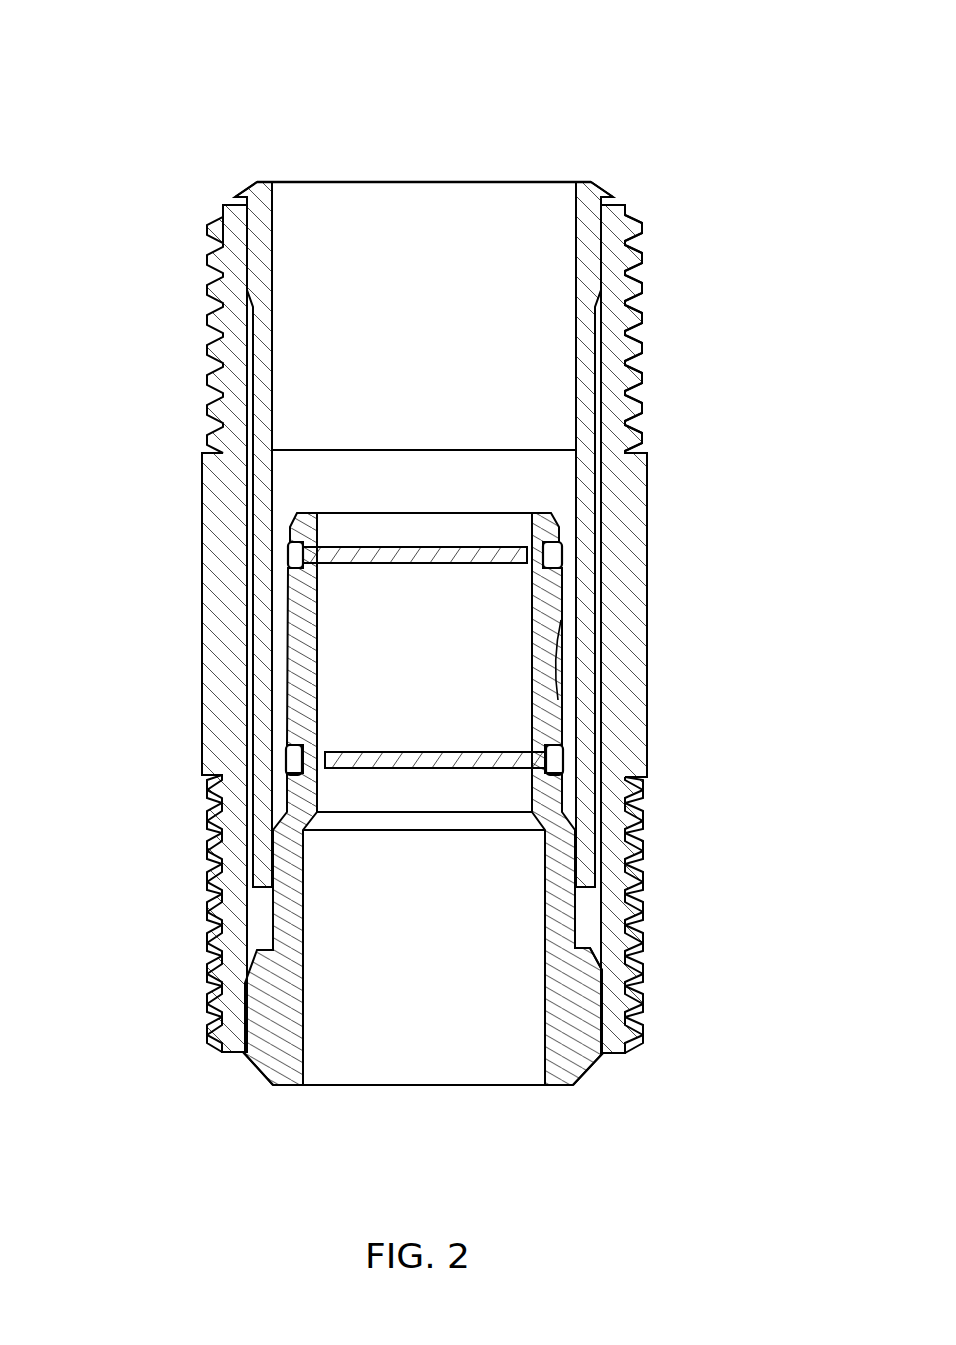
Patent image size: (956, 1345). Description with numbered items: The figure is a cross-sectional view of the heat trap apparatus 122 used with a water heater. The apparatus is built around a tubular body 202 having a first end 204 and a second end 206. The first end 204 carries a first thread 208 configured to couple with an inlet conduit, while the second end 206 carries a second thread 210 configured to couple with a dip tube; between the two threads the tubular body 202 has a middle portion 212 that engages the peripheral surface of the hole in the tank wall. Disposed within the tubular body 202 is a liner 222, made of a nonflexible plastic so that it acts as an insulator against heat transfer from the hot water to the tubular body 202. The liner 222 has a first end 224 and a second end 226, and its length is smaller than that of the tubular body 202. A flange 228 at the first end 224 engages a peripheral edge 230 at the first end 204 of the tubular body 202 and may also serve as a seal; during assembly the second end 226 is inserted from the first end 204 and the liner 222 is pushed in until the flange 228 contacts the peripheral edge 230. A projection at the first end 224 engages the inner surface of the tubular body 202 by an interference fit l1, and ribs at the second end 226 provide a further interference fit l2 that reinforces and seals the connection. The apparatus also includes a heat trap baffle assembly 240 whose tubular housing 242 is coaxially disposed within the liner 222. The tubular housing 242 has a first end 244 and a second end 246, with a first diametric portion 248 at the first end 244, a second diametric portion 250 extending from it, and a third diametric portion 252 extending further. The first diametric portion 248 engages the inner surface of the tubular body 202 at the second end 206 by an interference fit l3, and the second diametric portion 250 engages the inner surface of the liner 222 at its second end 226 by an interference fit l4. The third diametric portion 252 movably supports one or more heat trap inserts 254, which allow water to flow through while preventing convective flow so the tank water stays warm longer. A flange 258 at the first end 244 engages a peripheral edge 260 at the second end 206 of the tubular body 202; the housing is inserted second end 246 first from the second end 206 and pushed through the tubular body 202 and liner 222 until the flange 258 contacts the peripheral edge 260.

The heat trap apparatus 122 is at (570, 62).
The tubular body 202 is at (660, 455).
The first end 204 is at (652, 212).
The second end 206 is at (640, 1065).
The first thread 208 is at (633, 280).
The second thread 210 is at (640, 937).
The middle portion 212 is at (647, 557).
The liner 222 is at (280, 145).
The first end 224 is at (236, 160).
The second end 226 is at (262, 895).
The flange 228 is at (243, 193).
The peripheral edge 230 is at (618, 202).
The heat trap baffle assembly 240 is at (498, 1102).
The tubular housing 242 is at (287, 1067).
The first end 244 is at (253, 1084).
The second end 246 is at (540, 502).
The first diametric portion 248 is at (565, 1003).
The second diametric portion 250 is at (557, 905).
The third diametric portion 252 is at (545, 667).
The heat trap inserts 254 is at (357, 546).
The flange 258 is at (592, 1072).
The peripheral edge 260 is at (228, 1057).
The interference fit l1 is at (243, 243).
The interference fit l2 is at (250, 838).
The interference fit l3 is at (243, 985).
The interference fit l4 is at (268, 860).